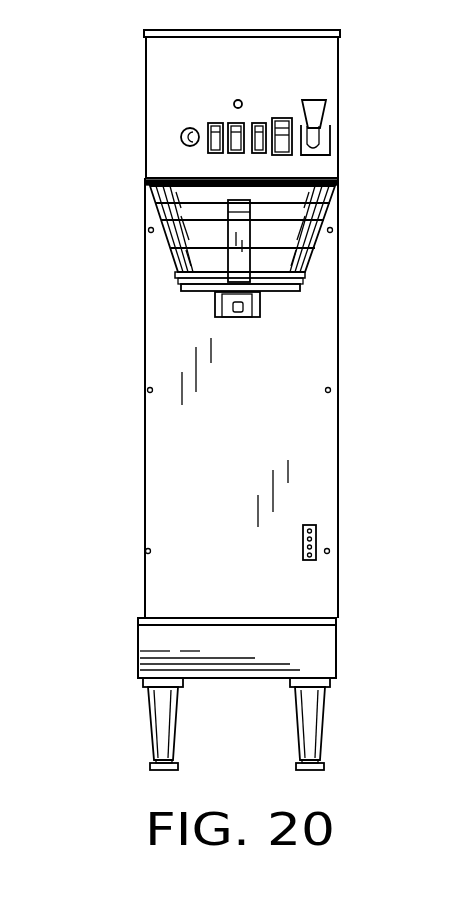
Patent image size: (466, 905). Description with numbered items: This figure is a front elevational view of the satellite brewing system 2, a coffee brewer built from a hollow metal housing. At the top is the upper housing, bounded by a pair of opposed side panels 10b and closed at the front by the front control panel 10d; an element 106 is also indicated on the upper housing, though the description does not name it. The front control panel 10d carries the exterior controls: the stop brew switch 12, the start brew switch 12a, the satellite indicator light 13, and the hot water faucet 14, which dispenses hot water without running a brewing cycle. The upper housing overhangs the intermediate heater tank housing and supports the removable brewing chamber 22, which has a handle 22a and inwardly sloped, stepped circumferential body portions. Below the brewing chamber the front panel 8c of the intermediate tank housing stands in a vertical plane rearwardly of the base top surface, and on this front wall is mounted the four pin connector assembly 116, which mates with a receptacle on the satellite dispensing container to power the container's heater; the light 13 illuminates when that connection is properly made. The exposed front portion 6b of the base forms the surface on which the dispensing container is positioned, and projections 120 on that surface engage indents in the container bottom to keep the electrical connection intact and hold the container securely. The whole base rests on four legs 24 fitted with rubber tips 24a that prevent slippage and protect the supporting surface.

The satellite brewing system 2 is at (374, 239).
The top cover 106 is at (340, 57).
The side panels 10b is at (145, 100).
The front control panel 10d is at (340, 83).
The satellite indicator light 13 is at (213, 126).
The start brew switch 12a is at (237, 125).
The stop brew switch 12 is at (261, 125).
The hot water faucet 14 is at (318, 136).
The brewing chamber 22 is at (161, 239).
The handle 22a is at (242, 269).
The front panel 8c is at (247, 428).
The four pin connector assembly 116 is at (312, 531).
The exposed front portion 6b is at (226, 618).
The projections 120 is at (180, 617).
The legs 24 is at (165, 714).
The rubber tips 24a is at (160, 771).